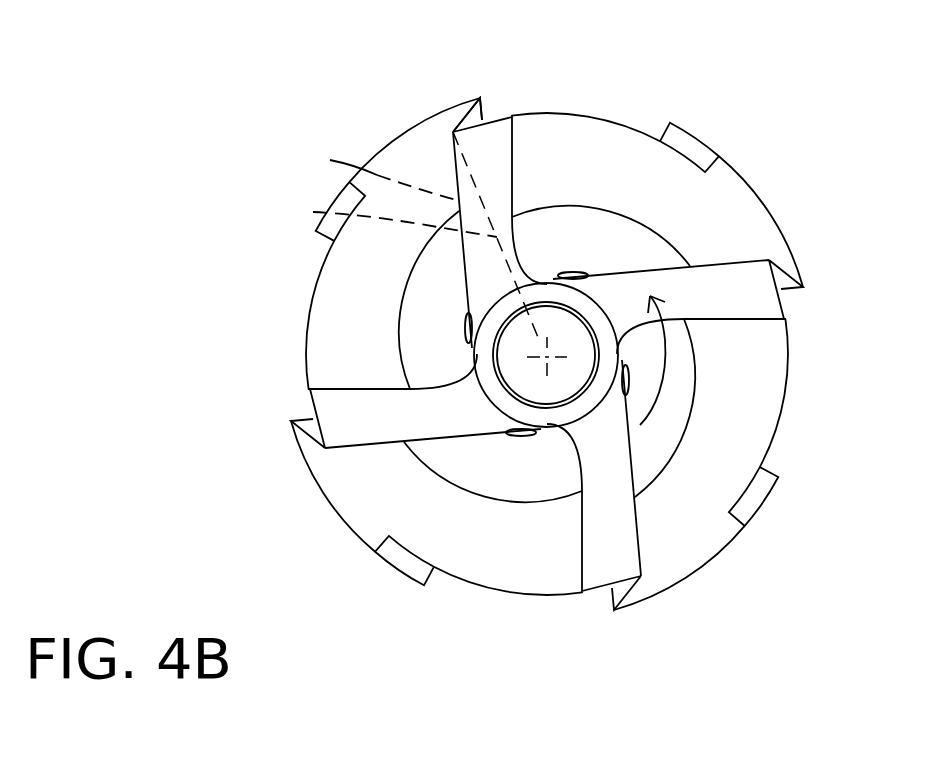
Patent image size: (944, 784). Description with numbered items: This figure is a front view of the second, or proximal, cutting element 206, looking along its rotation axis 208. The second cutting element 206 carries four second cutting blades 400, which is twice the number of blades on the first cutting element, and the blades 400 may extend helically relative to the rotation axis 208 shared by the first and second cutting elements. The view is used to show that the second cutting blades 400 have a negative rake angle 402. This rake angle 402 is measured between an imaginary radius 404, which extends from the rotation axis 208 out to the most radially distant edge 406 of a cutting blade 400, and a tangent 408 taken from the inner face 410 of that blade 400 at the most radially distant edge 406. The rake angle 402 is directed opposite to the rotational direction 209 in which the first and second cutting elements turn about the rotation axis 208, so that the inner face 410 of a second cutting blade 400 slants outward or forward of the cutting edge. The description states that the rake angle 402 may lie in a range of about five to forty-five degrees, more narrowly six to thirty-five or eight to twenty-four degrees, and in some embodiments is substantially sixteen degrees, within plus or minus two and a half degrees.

The second cutting element 206 is at (159, 78).
The second cutting blades 400 is at (498, 113).
The rake angle 402 is at (515, 328).
The imaginary radius 404 is at (313, 212).
The most radially distant edge 406 is at (453, 132).
The tangent 408 is at (318, 158).
The inner face 410 is at (687, 264).
The rotation axis 208 is at (550, 358).
The rotational direction 209 is at (672, 367).